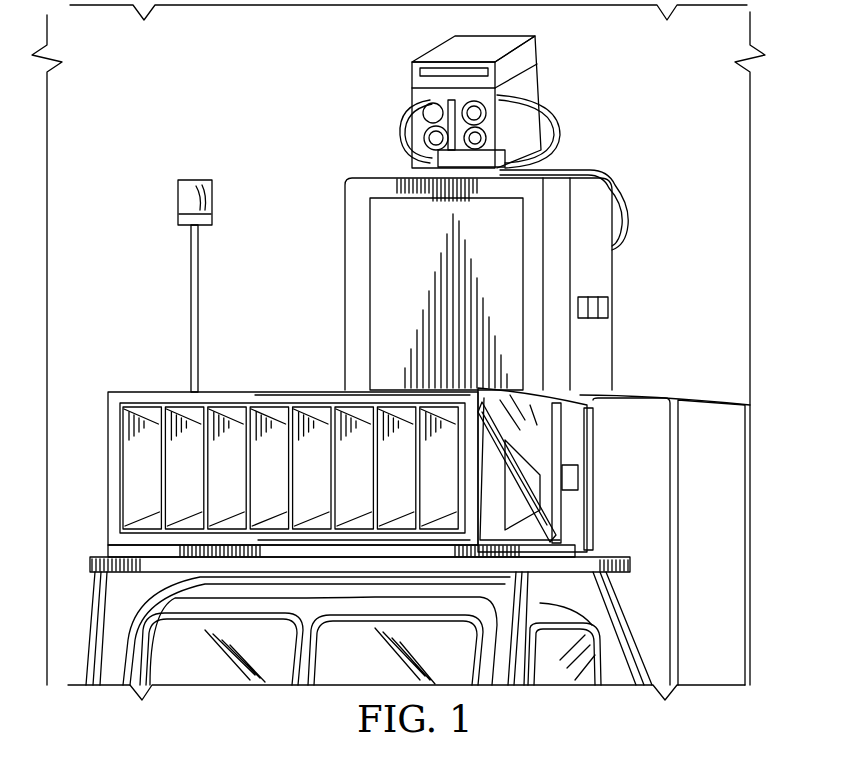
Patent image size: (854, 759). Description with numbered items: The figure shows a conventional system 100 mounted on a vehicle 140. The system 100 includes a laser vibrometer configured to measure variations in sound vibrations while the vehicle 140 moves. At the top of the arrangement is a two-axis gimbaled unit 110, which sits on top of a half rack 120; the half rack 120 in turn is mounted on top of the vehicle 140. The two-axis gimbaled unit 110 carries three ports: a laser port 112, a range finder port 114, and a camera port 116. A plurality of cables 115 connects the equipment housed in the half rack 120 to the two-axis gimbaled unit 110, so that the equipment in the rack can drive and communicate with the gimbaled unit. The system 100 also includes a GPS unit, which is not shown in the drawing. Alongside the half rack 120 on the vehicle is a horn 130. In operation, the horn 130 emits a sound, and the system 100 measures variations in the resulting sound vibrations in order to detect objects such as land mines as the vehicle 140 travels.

The conventional system 100 is at (219, 99).
The two-axis gimbaled unit 110 is at (406, 65).
The laser port 112 is at (478, 113).
The range finder port 114 is at (480, 138).
The cables 115 is at (625, 195).
The camera port 116 is at (430, 130).
The half rack 120 is at (621, 283).
The horn 130 is at (133, 437).
The vehicle 140 is at (643, 415).